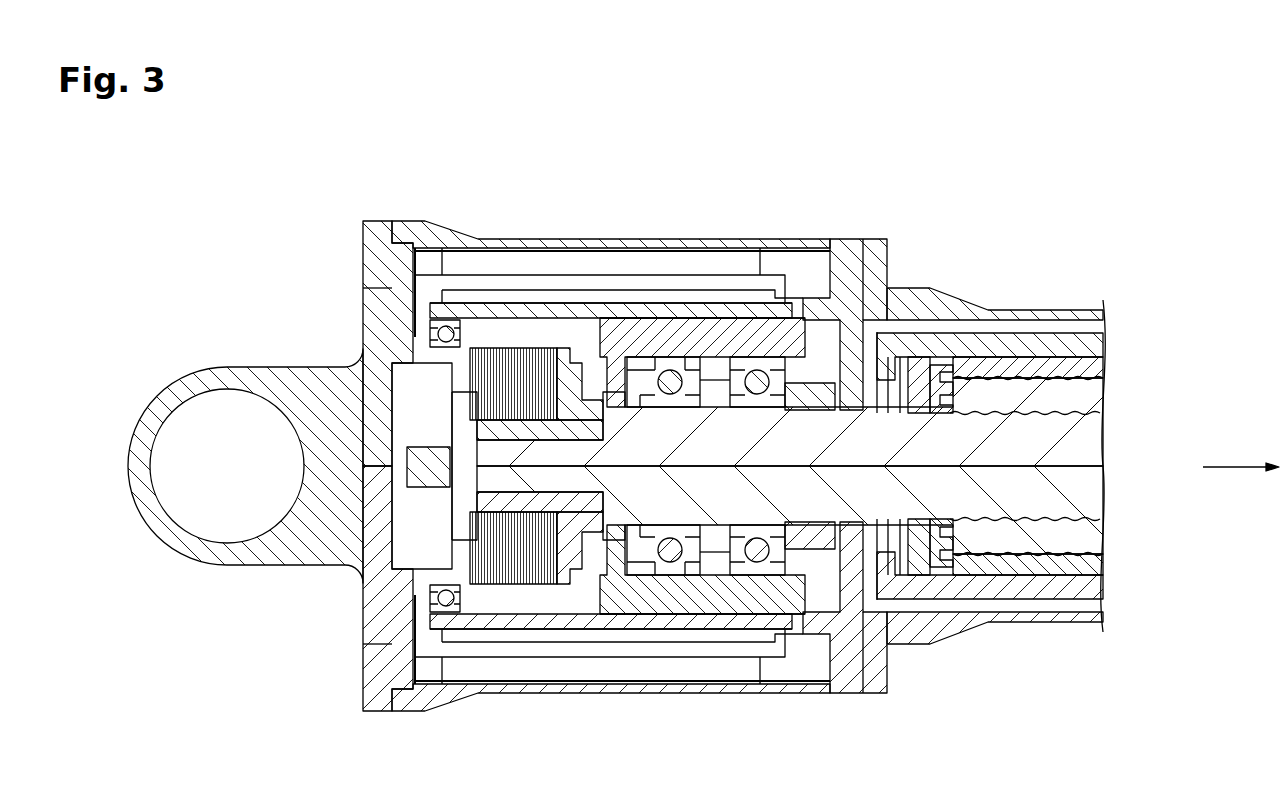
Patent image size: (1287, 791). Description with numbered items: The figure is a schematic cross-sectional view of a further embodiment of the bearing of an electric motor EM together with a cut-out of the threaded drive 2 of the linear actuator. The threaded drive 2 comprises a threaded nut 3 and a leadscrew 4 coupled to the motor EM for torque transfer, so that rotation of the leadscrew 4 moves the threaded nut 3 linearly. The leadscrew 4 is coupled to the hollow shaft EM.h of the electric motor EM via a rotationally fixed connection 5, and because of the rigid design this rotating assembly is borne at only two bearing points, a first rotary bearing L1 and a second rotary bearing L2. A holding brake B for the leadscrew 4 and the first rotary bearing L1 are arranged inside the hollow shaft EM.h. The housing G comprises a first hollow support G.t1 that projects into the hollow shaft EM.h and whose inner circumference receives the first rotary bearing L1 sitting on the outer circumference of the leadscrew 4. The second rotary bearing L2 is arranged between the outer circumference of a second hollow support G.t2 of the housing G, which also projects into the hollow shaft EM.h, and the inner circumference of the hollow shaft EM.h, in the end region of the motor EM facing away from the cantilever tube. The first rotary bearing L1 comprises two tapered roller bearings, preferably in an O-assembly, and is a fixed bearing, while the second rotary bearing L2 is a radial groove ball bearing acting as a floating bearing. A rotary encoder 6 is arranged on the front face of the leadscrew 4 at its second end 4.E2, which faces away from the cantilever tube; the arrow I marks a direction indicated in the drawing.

The threaded drive 2 is at (1055, 290).
The threaded nut 3 is at (962, 348).
The leadscrew 4 is at (1047, 452).
The second end of the leadscrew 4.E2 is at (445, 497).
The rotationally fixed connection 5 is at (614, 356).
The rotary encoder 6 is at (422, 468).
The holding brake B is at (519, 505).
The electric motor EM is at (701, 210).
The hollow shaft EM.h is at (673, 623).
The housing G is at (1017, 316).
The first hollow support G.t1 is at (743, 347).
The second hollow support G.t2 is at (402, 602).
The direction of installation I is at (1237, 466).
The first rotary bearing L1 is at (710, 356).
The second rotary bearing L2 is at (437, 335).